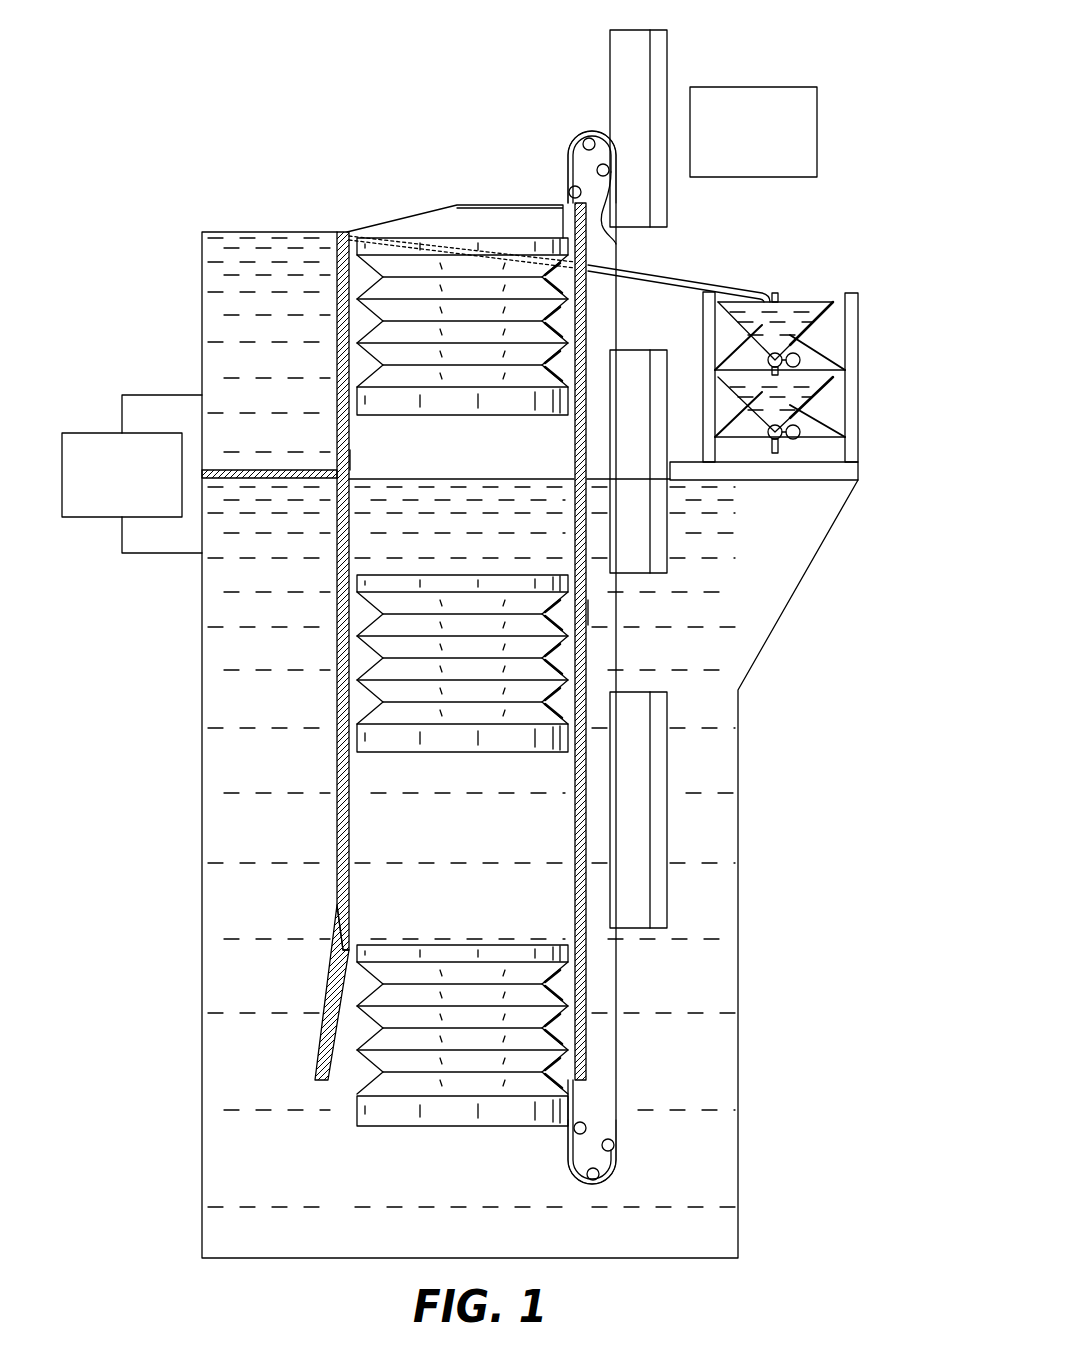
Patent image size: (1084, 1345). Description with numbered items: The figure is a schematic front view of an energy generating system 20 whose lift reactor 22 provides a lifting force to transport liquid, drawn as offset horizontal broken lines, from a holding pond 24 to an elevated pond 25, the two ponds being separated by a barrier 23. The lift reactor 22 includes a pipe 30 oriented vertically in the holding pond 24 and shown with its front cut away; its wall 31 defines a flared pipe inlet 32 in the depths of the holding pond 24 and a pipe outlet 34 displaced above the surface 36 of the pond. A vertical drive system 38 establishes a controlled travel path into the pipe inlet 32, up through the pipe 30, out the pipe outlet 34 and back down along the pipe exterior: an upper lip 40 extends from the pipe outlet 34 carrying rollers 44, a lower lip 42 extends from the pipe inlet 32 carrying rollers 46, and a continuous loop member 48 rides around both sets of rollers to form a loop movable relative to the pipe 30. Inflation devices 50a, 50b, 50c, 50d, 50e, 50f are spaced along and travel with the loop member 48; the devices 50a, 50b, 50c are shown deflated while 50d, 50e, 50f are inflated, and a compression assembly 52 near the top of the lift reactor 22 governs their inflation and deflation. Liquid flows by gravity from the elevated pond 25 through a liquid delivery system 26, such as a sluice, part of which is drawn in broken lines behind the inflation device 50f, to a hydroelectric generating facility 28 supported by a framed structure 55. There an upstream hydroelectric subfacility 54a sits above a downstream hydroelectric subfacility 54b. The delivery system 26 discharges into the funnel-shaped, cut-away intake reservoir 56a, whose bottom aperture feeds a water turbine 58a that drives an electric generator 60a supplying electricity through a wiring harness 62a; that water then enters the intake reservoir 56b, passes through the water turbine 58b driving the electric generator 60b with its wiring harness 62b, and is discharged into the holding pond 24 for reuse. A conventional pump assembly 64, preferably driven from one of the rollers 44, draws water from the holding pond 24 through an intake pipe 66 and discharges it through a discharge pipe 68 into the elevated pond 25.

The energy generating system 20 is at (230, 108).
The lift reactor 22 is at (378, 112).
The barrier 23 is at (275, 480).
The holding pond 24 is at (262, 778).
The elevated pond 25 is at (230, 297).
The liquid delivery system 26 is at (680, 280).
The hydroelectric generating facility 28 is at (815, 278).
The pipe 30 is at (337, 820).
The wall 31 is at (350, 458).
The pipe inlet 32 is at (352, 1082).
The pipe outlet 34 is at (457, 203).
The surface 36 is at (432, 475).
The vertical drive system 38 is at (566, 1163).
The upper lip 40 is at (585, 133).
The lower lip 42 is at (616, 1158).
The rollers 44 is at (617, 243).
The rollers 46 is at (585, 1122).
The continuous loop member 48 is at (567, 180).
The inflation device 50a is at (608, 55).
The inflation device 50b is at (650, 348).
The inflation device 50c is at (670, 812).
The inflation device 50d is at (465, 1132).
The inflation device 50e is at (378, 667).
The inflation device 50f is at (505, 422).
The compression assembly 52 is at (770, 166).
The hydroelectric subfacility 54a is at (834, 278).
The hydroelectric subfacility 54b is at (760, 458).
The framed structure 55 is at (860, 298).
The intake reservoir 56a is at (805, 301).
The intake reservoir 56b is at (730, 400).
The water turbine 58a is at (782, 342).
The water turbine 58b is at (766, 432).
The electric generator 60a is at (805, 360).
The electric generator 60b is at (805, 432).
The wiring harness 62a is at (848, 378).
The wiring harness 62b is at (845, 448).
The pump assembly 64 is at (137, 506).
The intake pipe 66 is at (140, 555).
The discharge pipe 68 is at (140, 394).